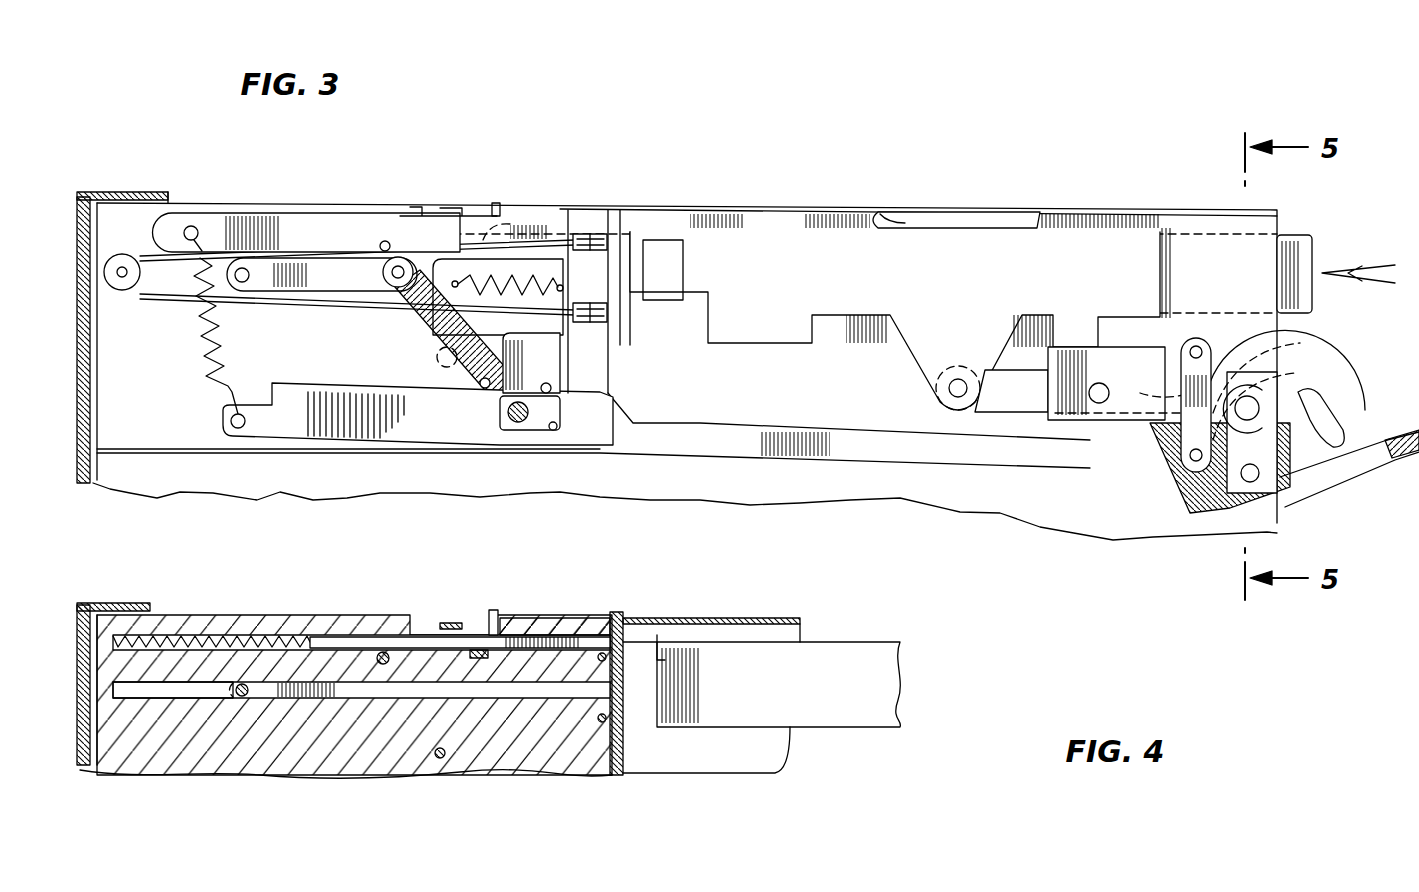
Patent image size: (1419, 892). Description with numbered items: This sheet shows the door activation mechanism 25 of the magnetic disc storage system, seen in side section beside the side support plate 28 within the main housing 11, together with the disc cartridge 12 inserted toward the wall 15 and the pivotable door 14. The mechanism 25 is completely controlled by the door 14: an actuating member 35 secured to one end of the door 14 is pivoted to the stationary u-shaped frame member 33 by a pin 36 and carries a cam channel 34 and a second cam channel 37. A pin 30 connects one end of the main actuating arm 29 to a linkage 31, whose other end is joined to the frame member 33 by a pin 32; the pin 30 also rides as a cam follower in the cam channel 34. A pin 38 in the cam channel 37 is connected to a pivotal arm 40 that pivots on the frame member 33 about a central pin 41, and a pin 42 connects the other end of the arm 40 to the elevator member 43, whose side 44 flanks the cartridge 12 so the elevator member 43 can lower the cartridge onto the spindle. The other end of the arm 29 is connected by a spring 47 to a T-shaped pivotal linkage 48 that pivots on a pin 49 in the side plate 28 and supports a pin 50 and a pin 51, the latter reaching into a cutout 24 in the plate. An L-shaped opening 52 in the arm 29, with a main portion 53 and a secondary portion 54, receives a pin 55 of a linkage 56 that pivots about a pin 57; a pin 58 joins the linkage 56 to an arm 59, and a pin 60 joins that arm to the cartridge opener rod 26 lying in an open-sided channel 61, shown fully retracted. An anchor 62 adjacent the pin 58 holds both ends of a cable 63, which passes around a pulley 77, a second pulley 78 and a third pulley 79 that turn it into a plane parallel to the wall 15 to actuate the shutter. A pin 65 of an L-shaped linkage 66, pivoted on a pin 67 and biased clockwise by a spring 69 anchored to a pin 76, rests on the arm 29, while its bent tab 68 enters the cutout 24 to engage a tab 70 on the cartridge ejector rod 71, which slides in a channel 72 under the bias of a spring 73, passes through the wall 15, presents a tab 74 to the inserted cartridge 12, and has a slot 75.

In FIG. 3, the main housing 11 is at (130, 193).
In FIG. 4, the main housing 11 is at (118, 603).
In FIG. 3, the disc cartridge 12 is at (1292, 250).
In FIG. 4, the disc cartridge 12 is at (870, 655).
In FIG. 3, the pivotable door 14 is at (1357, 468).
In FIG. 4, the wall 15 is at (617, 760).
In FIG. 4, the cutout 24 is at (413, 618).
In FIG. 3, the door activation mechanism 25 is at (420, 162).
In FIG. 4, the cartridge opener rod 26 is at (400, 698).
In FIG. 3, the side support plate 28 is at (140, 372).
In FIG. 4, the side support plate 28 is at (235, 760).
In FIG. 3, the main actuating arm 29 is at (770, 435).
In FIG. 3, the pin 30 is at (1190, 458).
In FIG. 3, the linkage 31 is at (1178, 396).
In FIG. 3, the pin 32 is at (1200, 346).
In FIG. 3, the u-shaped frame member 33 is at (1175, 228).
In FIG. 3, the cam channel 34 is at (1290, 343).
In FIG. 3, the actuating member 35 is at (1347, 412).
In FIG. 3, the pin 36 is at (1259, 473).
In FIG. 3, the second cam channel 37 is at (1322, 395).
In FIG. 3, the pin 38 is at (1247, 422).
In FIG. 3, the pivotal arm 40 is at (1000, 400).
In FIG. 3, the central pin 41 is at (1107, 390).
In FIG. 3, the pin 42 is at (952, 390).
In FIG. 3, the elevator member 43 is at (797, 258).
In FIG. 3, the side 44 is at (978, 238).
In FIG. 3, the spring 47 is at (225, 392).
In FIG. 3, the T-shaped pivotal linkage 48 is at (300, 225).
In FIG. 3, the pin 49 is at (387, 240).
In FIG. 4, the pin 49 is at (383, 652).
In FIG. 3, the pin 50 is at (404, 290).
In FIG. 3, the pin 51 is at (510, 224).
In FIG. 4, the pin 51 is at (484, 656).
In FIG. 3, the L-shaped opening 52 is at (562, 412).
In FIG. 3, the main portion 53 is at (553, 431).
In FIG. 3, the secondary portion 54 is at (517, 424).
In FIG. 3, the pin 55 is at (506, 420).
In FIG. 3, the linkage 56 is at (463, 360).
In FIG. 3, the pin 57 is at (470, 386).
In FIG. 4, the pin 57 is at (440, 758).
In FIG. 3, the pin 58 is at (352, 304).
In FIG. 3, the arm 59 is at (340, 252).
In FIG. 3, the pin 60 is at (240, 268).
In FIG. 4, the pin 60 is at (246, 684).
In FIG. 4, the open-sided channel 61 is at (178, 697).
In FIG. 3, the anchor 62 is at (384, 278).
In FIG. 3, the cable 63 is at (160, 296).
In FIG. 3, the pin 65 is at (551, 390).
In FIG. 3, the L-shaped linkage 66 is at (493, 350).
In FIG. 3, the pin 67 is at (400, 345).
In FIG. 4, the tab 68 is at (452, 623).
In FIG. 3, the spring 69 is at (517, 280).
In FIG. 3, the tab 70 is at (495, 203).
In FIG. 4, the tab 70 is at (497, 612).
In FIG. 4, the cartridge ejector rod 71 is at (625, 620).
In FIG. 4, the channel 72 is at (228, 640).
In FIG. 4, the spring 73 is at (200, 640).
In FIG. 4, the tab 74 is at (668, 658).
In FIG. 4, the slot 75 is at (545, 642).
In FIG. 3, the pin 76 is at (562, 286).
In FIG. 3, the pulley 77 is at (118, 260).
In FIG. 3, the second pulley 78 is at (600, 236).
In FIG. 3, the third pulley 79 is at (616, 322).